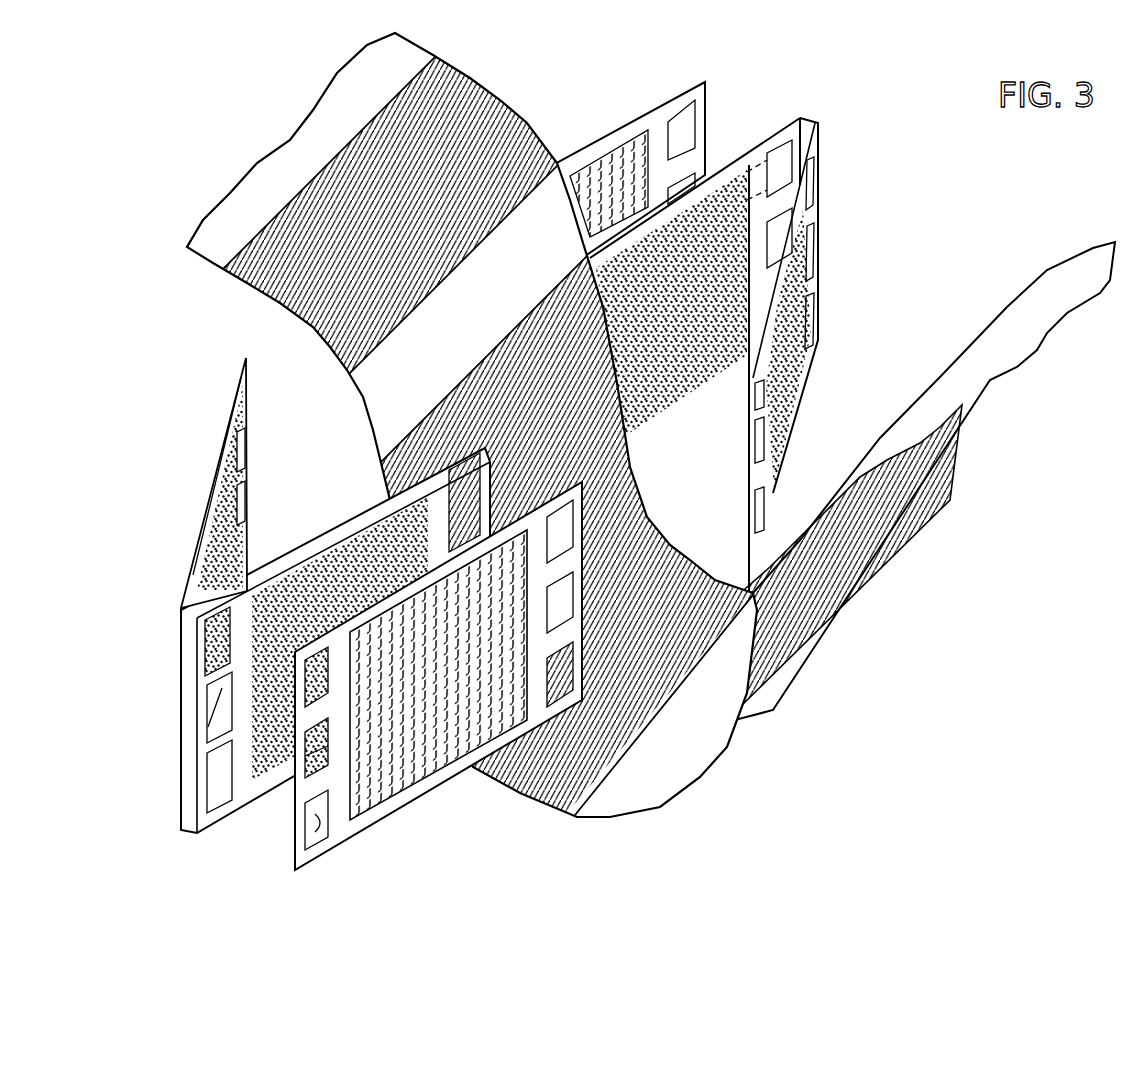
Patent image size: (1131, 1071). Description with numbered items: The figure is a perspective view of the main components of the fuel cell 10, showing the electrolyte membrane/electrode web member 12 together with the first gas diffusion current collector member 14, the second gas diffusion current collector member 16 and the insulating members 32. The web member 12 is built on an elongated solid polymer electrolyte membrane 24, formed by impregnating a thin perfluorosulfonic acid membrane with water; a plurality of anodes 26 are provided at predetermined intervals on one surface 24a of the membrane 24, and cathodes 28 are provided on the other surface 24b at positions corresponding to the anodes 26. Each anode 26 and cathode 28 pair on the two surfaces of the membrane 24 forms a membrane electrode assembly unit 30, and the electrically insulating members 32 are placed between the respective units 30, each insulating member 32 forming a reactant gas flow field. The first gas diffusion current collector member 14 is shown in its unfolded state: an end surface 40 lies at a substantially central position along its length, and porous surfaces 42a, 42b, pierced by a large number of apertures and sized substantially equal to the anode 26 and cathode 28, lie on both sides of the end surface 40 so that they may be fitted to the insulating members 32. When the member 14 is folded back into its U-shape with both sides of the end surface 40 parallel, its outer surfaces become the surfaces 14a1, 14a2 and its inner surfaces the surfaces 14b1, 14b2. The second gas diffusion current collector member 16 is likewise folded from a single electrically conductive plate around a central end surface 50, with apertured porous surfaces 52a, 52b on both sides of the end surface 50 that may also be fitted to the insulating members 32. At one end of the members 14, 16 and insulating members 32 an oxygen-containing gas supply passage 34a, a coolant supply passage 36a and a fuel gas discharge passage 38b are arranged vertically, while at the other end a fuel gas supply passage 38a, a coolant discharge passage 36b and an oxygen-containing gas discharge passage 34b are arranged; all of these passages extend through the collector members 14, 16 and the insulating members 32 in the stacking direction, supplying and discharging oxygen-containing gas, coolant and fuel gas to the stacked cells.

The fuel cell 10 is at (565, 535).
The electrolyte membrane/electrode web member 12 is at (565, 535).
The first gas diffusion current collector member 14 is at (300, 582).
The outer surface of first gas diffusion current collector member 14a1 is at (302, 560).
The outer surface of first gas diffusion current collector member 14a2 is at (208, 476).
The inner surface of first gas diffusion current collector member 14b1 is at (333, 527).
The inner surface of first gas diffusion current collector member 14b2 is at (213, 469).
The second gas diffusion current collector member 16 is at (738, 325).
The solid polymer electrolyte membrane 24 is at (1068, 475).
The one surface of solid polymer electrolyte membrane 24a is at (940, 523).
The other surface of solid polymer electrolyte membrane 24b is at (987, 373).
The anode 26 is at (412, 447).
The cathode 28 is at (428, 424).
The membrane electrode assembly unit 30 is at (985, 553).
The insulating member 32 is at (708, 82).
The oxygen-containing gas supply passage 34a is at (313, 657).
The oxygen-containing gas discharge passage 34b is at (567, 667).
The coolant supply passage 36a is at (320, 762).
The coolant discharge passage 36b is at (563, 587).
The fuel gas supply passage 38a is at (563, 517).
The fuel gas discharge passage 38b is at (322, 832).
The end surface 40 is at (186, 806).
The porous surface of first gas diffusion current collector member 42a is at (383, 543).
The porous surface of first gas diffusion current collector member 42b is at (202, 535).
The end surface 50 is at (819, 303).
The porous surface of second gas diffusion current collector member 52a is at (721, 196).
The porous surface of second gas diffusion current collector member 52b is at (797, 386).